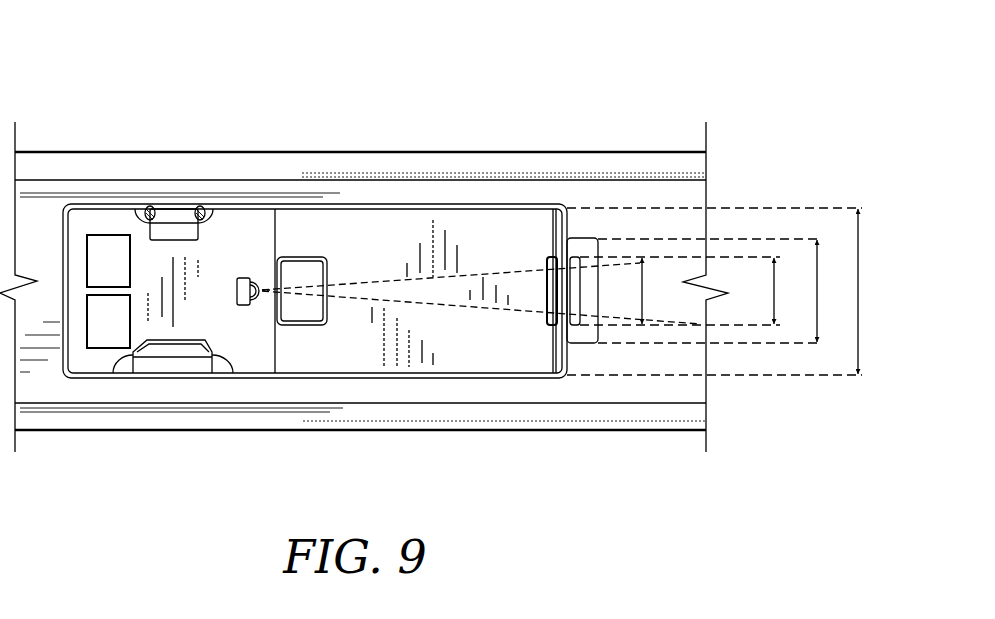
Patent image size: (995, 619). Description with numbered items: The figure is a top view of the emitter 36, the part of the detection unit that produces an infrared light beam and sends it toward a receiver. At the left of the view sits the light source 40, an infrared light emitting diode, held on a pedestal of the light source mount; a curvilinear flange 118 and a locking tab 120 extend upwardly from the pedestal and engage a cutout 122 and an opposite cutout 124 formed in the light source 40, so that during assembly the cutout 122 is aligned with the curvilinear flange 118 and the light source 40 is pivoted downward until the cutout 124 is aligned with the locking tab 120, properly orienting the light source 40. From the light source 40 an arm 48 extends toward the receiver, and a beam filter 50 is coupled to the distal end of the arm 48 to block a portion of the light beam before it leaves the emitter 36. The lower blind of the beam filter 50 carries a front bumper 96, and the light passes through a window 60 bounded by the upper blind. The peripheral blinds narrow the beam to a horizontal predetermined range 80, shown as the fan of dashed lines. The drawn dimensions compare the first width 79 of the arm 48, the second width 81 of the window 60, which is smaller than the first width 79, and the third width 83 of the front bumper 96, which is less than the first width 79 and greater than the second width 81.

The emitter 36 is at (68, 115).
The light source 40 is at (282, 200).
The arm 48 is at (367, 200).
The beam filter 50 is at (540, 186).
The window 60 is at (547, 308).
The first width 79 is at (860, 291).
The horizontal predetermined range 80 is at (643, 293).
The second width 81 is at (775, 293).
The third width 83 is at (818, 293).
The front bumper 96 is at (575, 286).
The curvilinear flange 118 is at (177, 364).
The locking tab 120 is at (175, 200).
The cutout 122 is at (218, 356).
The cutout 124 is at (205, 210).